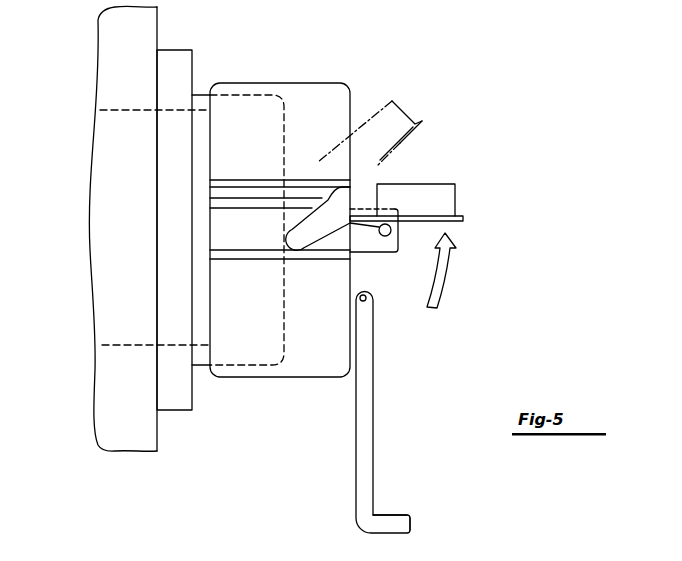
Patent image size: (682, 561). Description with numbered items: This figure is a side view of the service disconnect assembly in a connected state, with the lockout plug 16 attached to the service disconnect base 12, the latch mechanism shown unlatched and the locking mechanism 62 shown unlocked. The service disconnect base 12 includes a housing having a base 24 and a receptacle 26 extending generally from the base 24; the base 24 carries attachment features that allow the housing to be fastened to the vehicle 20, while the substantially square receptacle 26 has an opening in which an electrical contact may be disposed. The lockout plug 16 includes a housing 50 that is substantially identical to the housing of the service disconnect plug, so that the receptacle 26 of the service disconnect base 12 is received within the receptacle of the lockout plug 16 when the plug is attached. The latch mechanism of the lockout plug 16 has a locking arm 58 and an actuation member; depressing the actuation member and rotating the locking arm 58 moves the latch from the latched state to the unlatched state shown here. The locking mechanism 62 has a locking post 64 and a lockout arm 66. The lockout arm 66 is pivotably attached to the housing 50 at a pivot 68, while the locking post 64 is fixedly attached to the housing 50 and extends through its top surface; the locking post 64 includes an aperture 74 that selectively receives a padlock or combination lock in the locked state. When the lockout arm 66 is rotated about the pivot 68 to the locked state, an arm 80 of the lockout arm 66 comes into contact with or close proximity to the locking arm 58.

The service disconnect base 12 is at (194, 48).
The lockout plug 16 is at (438, 103).
The vehicle 20 is at (113, 26).
The base 24 is at (172, 54).
The receptacle 26 is at (241, 355).
The housing 50 is at (344, 78).
The locking arm 58 is at (455, 195).
The locking mechanism 62 is at (352, 430).
The locking post 64 is at (384, 252).
The lockout arm 66 is at (410, 525).
The pivot 68 is at (366, 298).
The aperture 74 is at (392, 230).
The arm 80 is at (398, 514).